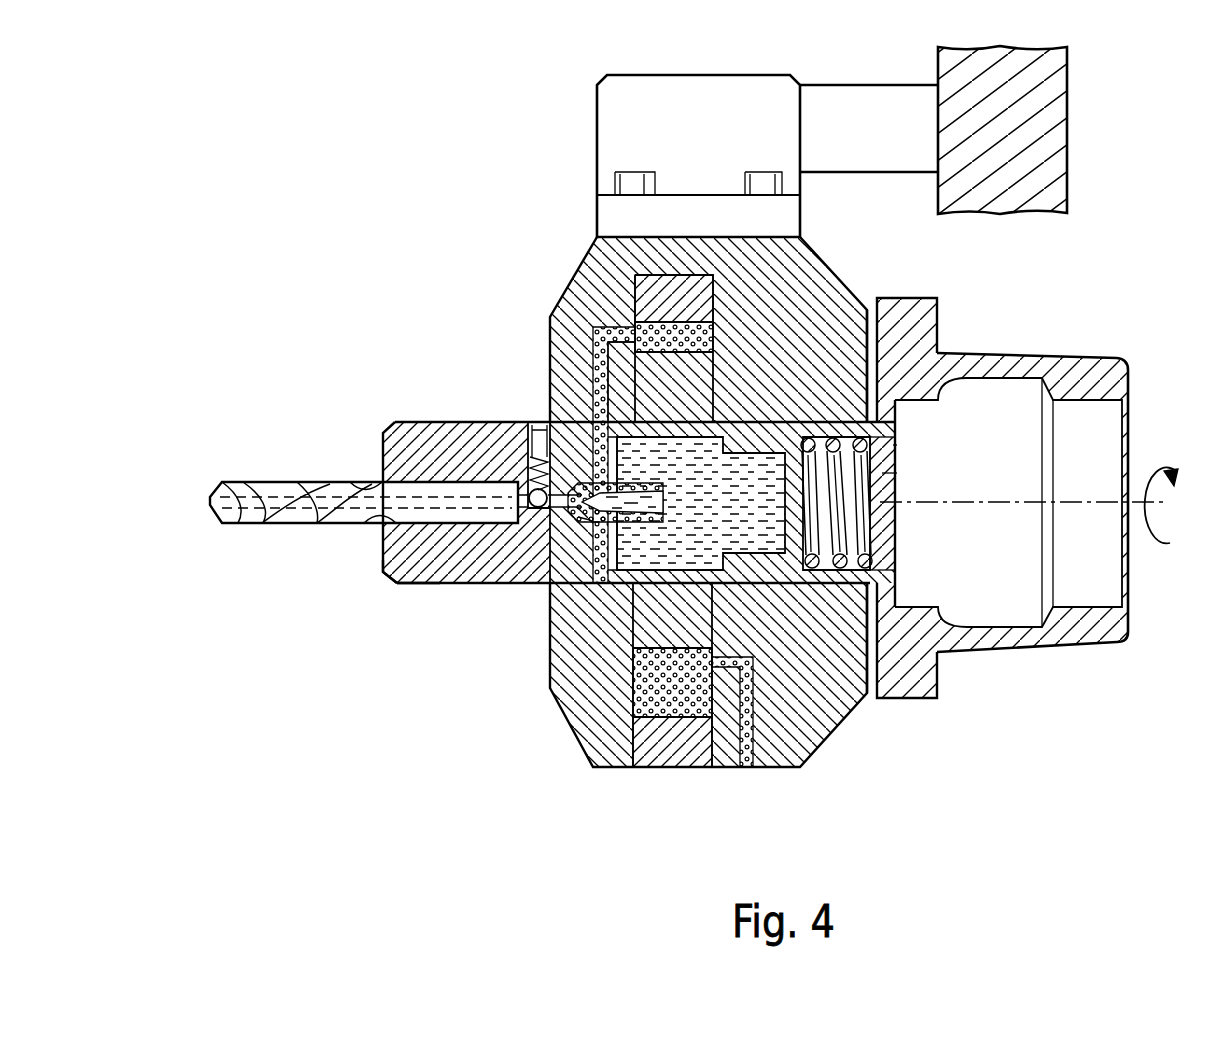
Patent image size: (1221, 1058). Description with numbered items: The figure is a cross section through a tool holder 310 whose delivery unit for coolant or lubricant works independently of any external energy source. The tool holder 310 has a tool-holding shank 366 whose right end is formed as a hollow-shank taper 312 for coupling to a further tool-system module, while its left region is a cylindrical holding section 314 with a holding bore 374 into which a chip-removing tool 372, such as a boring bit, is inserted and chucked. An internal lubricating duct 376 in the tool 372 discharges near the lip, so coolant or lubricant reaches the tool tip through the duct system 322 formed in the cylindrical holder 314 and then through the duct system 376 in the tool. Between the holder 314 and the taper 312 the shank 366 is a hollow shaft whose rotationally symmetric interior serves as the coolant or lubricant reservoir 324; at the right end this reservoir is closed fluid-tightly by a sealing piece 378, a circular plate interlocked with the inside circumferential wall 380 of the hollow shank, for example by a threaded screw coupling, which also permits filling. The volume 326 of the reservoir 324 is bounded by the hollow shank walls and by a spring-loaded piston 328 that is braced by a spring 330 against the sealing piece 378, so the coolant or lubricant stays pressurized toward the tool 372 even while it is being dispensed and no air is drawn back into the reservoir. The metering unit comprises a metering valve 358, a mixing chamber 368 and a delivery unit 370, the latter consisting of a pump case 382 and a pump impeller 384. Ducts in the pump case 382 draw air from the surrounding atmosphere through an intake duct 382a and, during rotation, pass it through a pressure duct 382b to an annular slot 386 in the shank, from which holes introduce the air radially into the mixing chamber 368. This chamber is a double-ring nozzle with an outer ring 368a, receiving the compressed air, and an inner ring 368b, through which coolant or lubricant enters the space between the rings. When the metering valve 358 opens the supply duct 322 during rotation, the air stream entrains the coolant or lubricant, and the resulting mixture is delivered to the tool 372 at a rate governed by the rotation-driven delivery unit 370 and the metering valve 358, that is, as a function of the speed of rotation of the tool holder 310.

The tool holder 310 is at (968, 327).
The hollow-shank taper 312 is at (1103, 442).
The cylindrical holding section 314 is at (387, 567).
The supply duct system 322 is at (558, 505).
The coolant or lubricant reservoir 324 is at (743, 543).
The coolant or lubricant volume 326 is at (708, 543).
The spring-loaded piston 328 is at (790, 560).
The spring 330 is at (863, 520).
The metering valve 358 is at (528, 457).
The tool-holding shank 366 is at (418, 583).
The mixing chamber 368 is at (590, 483).
The outer ring 368a is at (597, 523).
The inner ring 368b is at (590, 520).
The delivery unit 370 is at (563, 717).
The tool 372 is at (245, 488).
The holding bore 374 is at (382, 517).
The internal lubricating duct 376 is at (327, 497).
The sealing piece 378 is at (880, 473).
The inside circumferential wall 380 is at (895, 445).
The pump case 382 is at (603, 753).
The intake duct 382a is at (747, 767).
The pressure duct 382b is at (608, 327).
The pump impeller 384 is at (672, 752).
The annular slot 386 is at (593, 427).